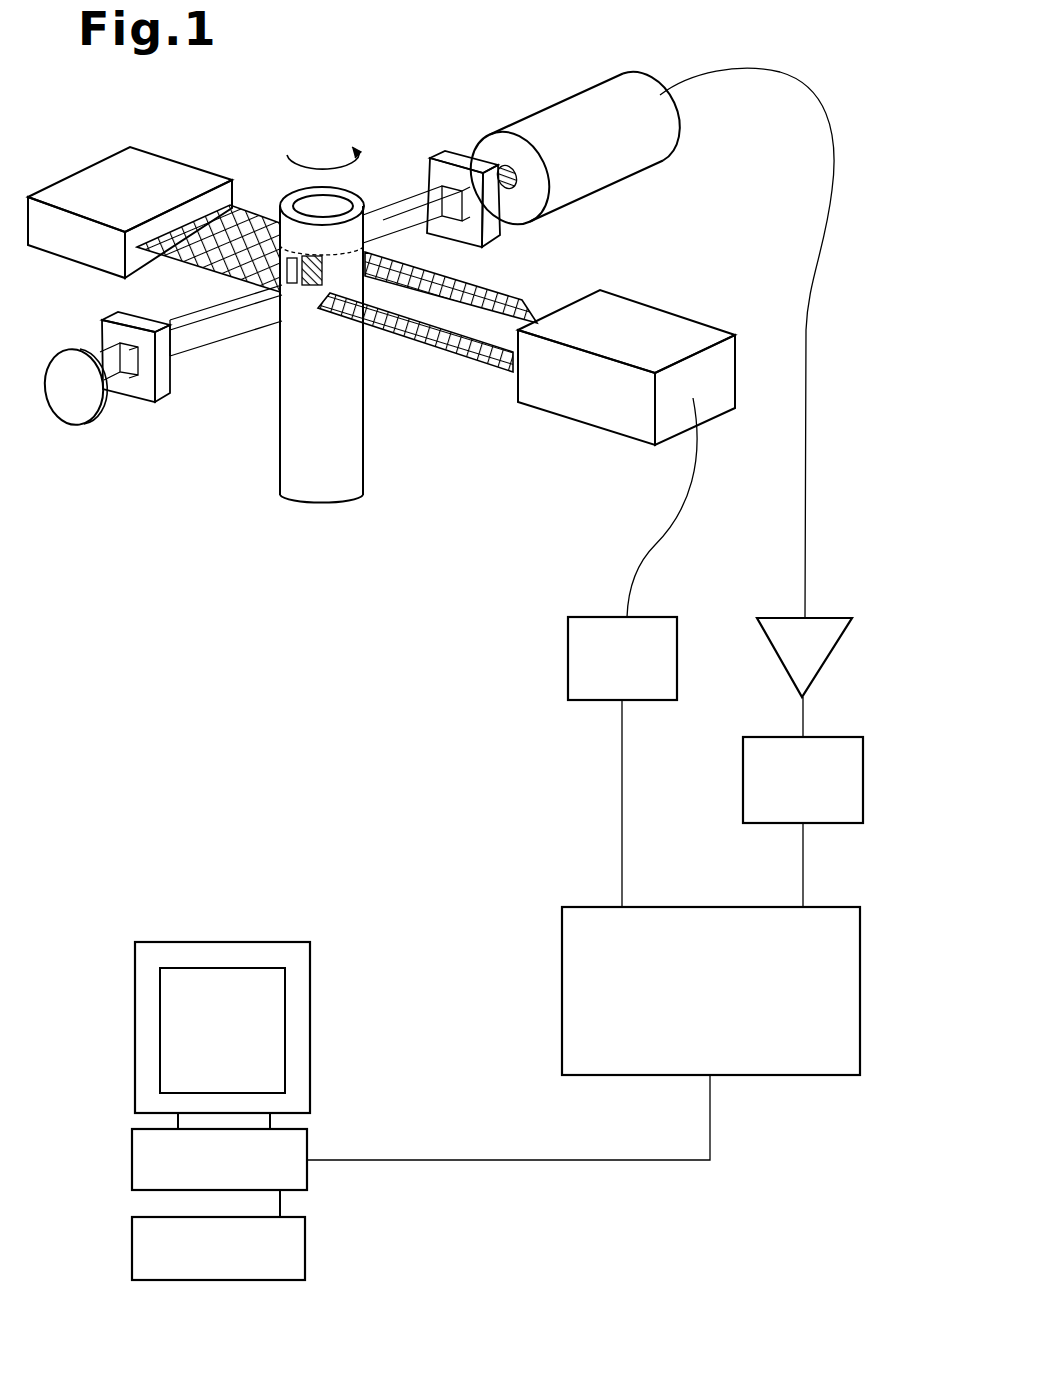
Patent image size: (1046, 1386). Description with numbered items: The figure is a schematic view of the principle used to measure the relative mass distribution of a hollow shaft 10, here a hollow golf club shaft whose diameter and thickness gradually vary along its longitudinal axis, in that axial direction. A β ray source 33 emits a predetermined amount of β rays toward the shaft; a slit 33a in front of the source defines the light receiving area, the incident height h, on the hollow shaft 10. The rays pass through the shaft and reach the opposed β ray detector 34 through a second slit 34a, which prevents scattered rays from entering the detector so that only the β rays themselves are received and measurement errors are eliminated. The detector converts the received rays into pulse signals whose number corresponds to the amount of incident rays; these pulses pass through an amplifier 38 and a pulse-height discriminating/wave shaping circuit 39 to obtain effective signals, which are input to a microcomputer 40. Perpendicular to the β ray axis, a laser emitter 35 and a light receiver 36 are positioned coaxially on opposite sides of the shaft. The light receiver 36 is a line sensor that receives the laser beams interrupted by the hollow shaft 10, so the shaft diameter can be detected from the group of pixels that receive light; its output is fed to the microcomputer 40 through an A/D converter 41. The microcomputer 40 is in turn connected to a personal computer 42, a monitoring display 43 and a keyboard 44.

The hollow shaft 10 is at (345, 458).
The β ray source 33 is at (83, 410).
The slit 33a is at (147, 388).
The β ray detector 34 is at (590, 178).
The slit 34a is at (493, 235).
The laser emitter 35 is at (105, 185).
The light receiver 36 is at (573, 397).
The amplifier 38 is at (828, 618).
The pulse-height discriminating/wave shaping circuit 39 is at (838, 742).
The microcomputer 40 is at (800, 1075).
The A/D converter 41 is at (665, 617).
The personal computer 42 is at (307, 1175).
The monitoring display 43 is at (300, 1064).
The keyboard 44 is at (305, 1245).